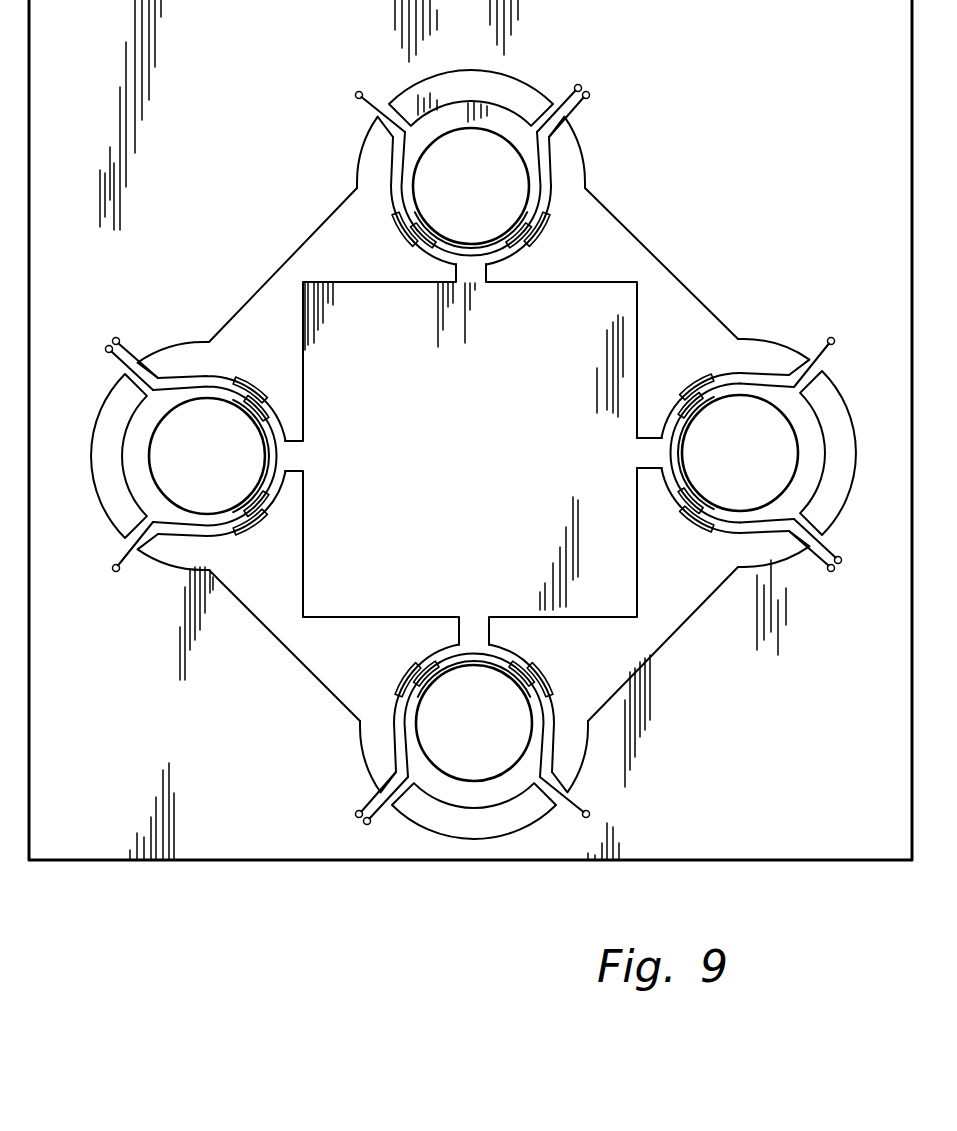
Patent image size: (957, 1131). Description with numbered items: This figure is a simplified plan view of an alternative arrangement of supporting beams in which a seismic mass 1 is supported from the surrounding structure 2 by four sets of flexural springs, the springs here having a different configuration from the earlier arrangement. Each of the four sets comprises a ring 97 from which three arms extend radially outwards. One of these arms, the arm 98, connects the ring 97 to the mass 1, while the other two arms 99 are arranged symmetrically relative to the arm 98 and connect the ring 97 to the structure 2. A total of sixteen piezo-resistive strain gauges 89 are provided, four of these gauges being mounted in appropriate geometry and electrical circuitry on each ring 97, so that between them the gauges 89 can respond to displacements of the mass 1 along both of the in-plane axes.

The mass 1 is at (504, 413).
The structure 2 is at (746, 151).
The piezo-resistive strain gauges 89 is at (700, 397).
The ring 97 is at (807, 438).
The arm 98 is at (649, 457).
The arms 99 is at (790, 377).